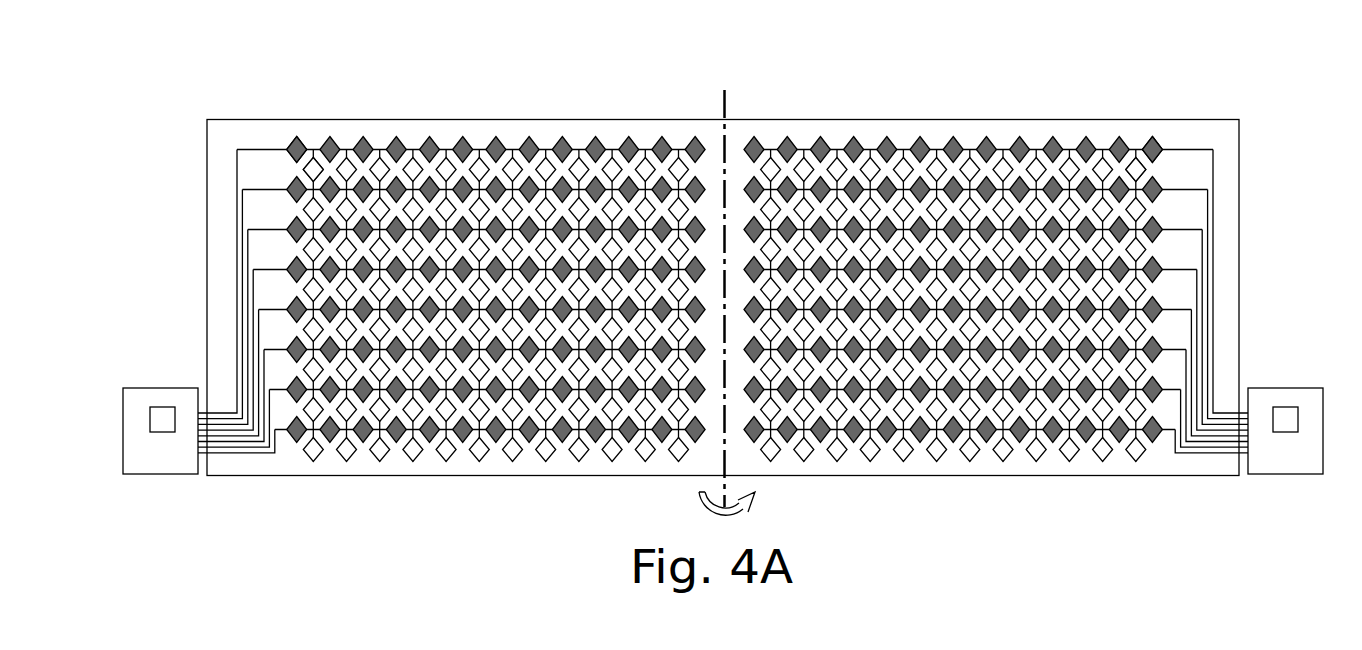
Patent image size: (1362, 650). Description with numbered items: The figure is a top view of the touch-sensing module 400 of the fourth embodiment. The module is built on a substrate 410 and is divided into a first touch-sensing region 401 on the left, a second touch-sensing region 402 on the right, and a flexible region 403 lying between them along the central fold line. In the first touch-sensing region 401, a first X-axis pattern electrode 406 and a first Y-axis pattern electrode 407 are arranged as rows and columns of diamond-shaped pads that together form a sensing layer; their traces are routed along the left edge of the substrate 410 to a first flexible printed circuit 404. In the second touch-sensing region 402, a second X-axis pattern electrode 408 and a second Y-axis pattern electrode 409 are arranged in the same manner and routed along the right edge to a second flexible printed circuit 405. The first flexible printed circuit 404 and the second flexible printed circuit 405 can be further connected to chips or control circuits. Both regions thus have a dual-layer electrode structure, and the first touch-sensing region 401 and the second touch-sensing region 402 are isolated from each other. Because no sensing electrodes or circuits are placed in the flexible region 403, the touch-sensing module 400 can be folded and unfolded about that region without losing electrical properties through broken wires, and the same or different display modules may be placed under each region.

The touch-sensing module 400 is at (997, 545).
The first touch-sensing region 401 is at (471, 255).
The second touch-sensing region 402 is at (978, 255).
The flexible region 403 is at (752, 80).
The first flexible printed circuit 404 is at (162, 460).
The second flexible printed circuit 405 is at (1290, 457).
The first X-axis pattern electrode 406 is at (294, 147).
The first Y-axis pattern electrode 407 is at (302, 175).
The second X-axis pattern electrode 408 is at (1155, 147).
The second Y-axis pattern electrode 409 is at (1148, 174).
The substrate 410 is at (1228, 327).